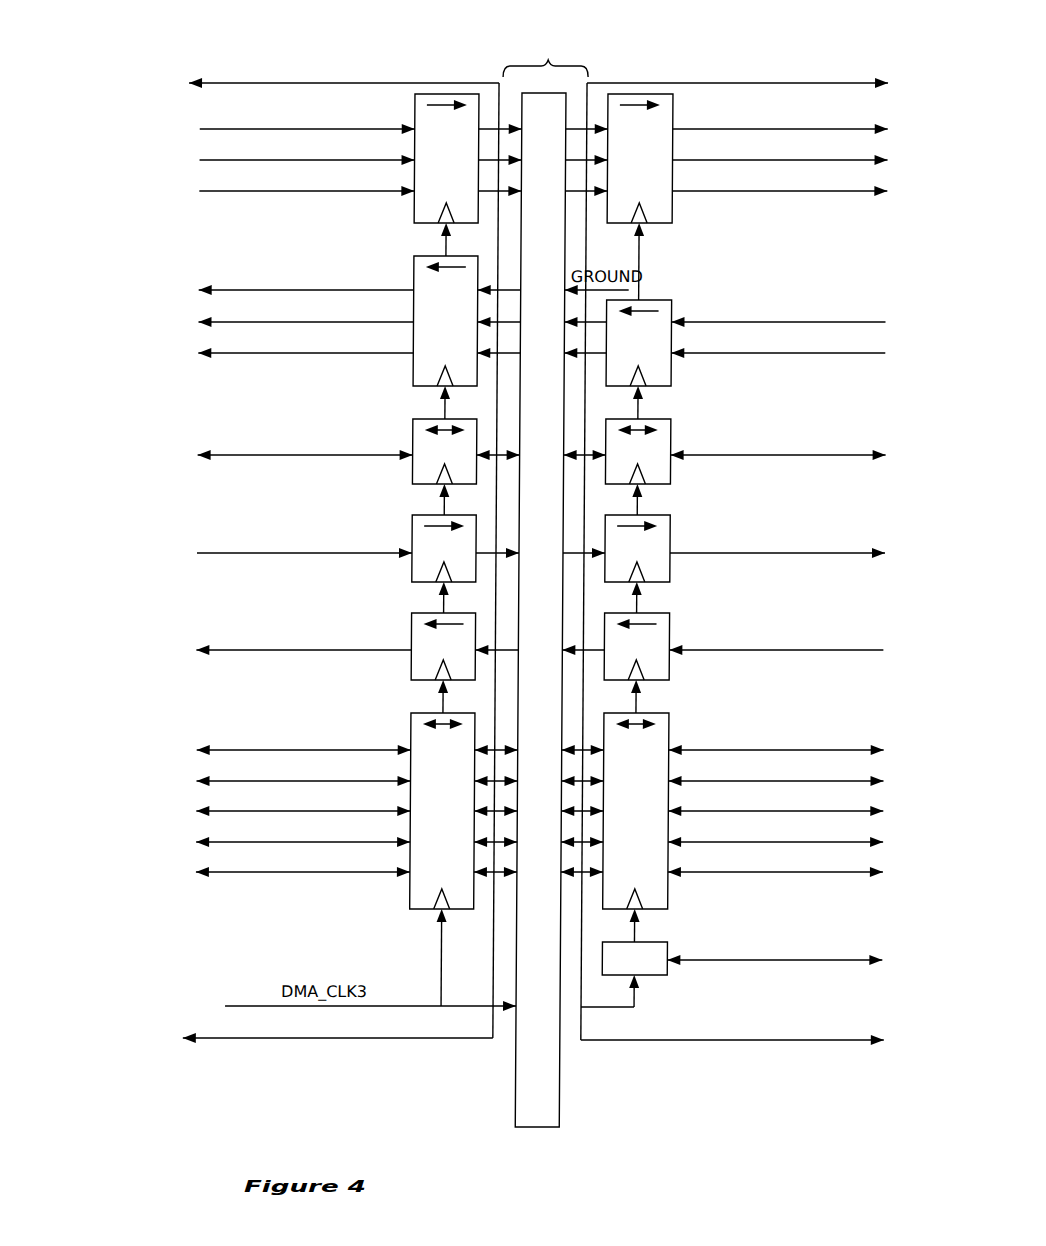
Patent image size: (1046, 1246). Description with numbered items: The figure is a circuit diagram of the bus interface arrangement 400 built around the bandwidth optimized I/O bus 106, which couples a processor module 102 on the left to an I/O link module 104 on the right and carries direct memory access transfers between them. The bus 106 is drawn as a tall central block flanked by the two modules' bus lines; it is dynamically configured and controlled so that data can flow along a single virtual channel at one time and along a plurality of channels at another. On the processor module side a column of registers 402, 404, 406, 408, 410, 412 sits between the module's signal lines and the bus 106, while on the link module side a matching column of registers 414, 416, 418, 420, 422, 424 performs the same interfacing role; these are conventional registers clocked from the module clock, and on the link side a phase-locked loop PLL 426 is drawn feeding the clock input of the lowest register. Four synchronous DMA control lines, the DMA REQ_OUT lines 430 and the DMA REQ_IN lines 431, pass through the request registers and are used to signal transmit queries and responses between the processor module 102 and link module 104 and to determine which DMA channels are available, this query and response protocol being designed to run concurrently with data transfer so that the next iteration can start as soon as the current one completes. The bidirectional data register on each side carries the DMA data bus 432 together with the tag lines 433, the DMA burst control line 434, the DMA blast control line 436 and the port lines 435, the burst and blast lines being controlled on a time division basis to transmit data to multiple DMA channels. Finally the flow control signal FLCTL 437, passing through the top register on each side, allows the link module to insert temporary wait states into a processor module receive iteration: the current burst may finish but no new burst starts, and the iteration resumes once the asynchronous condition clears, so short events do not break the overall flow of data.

The bus bridge logic 400 is at (813, 18).
The processor module 102 is at (429, 1024).
The I/O link module 104 is at (659, 1020).
The bandwidth optimized I/O bus 106 is at (542, 582).
The register 402 is at (413, 213).
The register 404 is at (409, 362).
The register 406 is at (409, 466).
The register 408 is at (408, 567).
The register 410 is at (408, 665).
The register 412 is at (410, 893).
The register 414 is at (673, 213).
The register 416 is at (673, 365).
The register 418 is at (673, 468).
The register 420 is at (673, 567).
The register 422 is at (673, 667).
The register 424 is at (673, 893).
The phase locked loop 426 is at (657, 977).
The DMA REQ_OUT signal 430 is at (306, 553).
The DMA REQ_IN signal 431 is at (306, 650).
The DMA data bus 432 is at (371, 750).
The tag signal 433 is at (362, 767).
The DMA burst control line 434 is at (362, 797).
The port signal 435 is at (362, 858).
The DMA blast control line 436 is at (362, 827).
The FLCTL flow control signal 437 is at (286, 192).